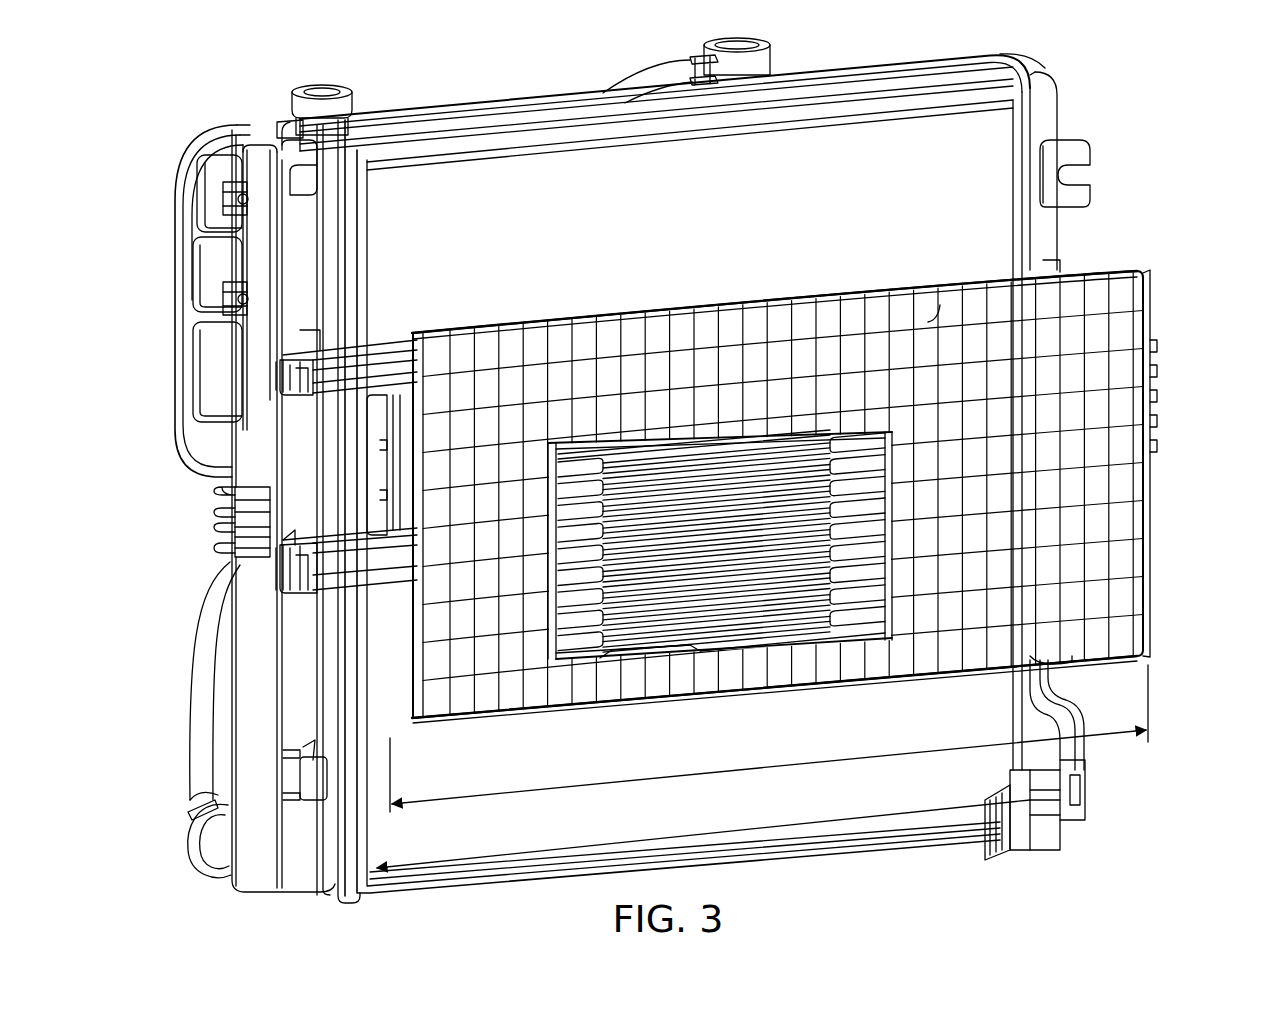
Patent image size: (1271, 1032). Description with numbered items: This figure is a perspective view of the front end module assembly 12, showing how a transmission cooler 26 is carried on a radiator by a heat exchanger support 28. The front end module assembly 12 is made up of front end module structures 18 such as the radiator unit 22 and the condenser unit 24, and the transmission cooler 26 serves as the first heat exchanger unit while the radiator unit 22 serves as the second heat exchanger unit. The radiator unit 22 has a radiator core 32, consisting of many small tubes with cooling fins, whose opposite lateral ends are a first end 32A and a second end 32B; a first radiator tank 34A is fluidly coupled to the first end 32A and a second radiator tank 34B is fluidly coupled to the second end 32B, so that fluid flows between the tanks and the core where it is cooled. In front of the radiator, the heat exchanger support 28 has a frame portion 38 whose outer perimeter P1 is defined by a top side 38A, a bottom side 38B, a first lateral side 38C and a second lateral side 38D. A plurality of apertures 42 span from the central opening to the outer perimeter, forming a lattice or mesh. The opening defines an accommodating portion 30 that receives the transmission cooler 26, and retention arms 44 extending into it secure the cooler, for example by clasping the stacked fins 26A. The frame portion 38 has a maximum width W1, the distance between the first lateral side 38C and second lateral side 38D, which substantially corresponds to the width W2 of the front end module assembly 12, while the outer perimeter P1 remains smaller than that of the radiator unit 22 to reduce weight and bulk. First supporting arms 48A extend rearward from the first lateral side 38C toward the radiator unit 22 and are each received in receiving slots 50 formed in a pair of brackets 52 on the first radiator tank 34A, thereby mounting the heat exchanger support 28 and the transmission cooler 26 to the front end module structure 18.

The front end module assembly 12 is at (1082, 47).
The front end module structure 18 is at (400, 88).
The radiator unit 22 is at (454, 96).
The condenser unit 24 is at (791, 182).
The transmission cooler 26 is at (712, 650).
The stacked fins 26A is at (778, 462).
The heat exchanger support 28 is at (632, 705).
The accommodating portion 30 is at (637, 445).
The radiator core 32 is at (333, 132).
The first end 32A is at (292, 138).
The second end 32B is at (1040, 108).
The first radiator tank 34A is at (270, 158).
The second radiator tank 34B is at (1093, 160).
The frame portion 38 is at (687, 506).
The top side 38A is at (498, 320).
The bottom side 38B is at (515, 712).
The first lateral side 38C is at (392, 690).
The second lateral side 38D is at (1157, 462).
The apertures 42 is at (940, 305).
The retention arms 44 is at (710, 448).
The first supporting arms 48A is at (330, 345).
The receiving slots 50 is at (297, 378).
The brackets 52 is at (304, 410).
The outer perimeter P1 is at (568, 315).
The maximum width W1 is at (769, 738).
The width W2 is at (703, 834).